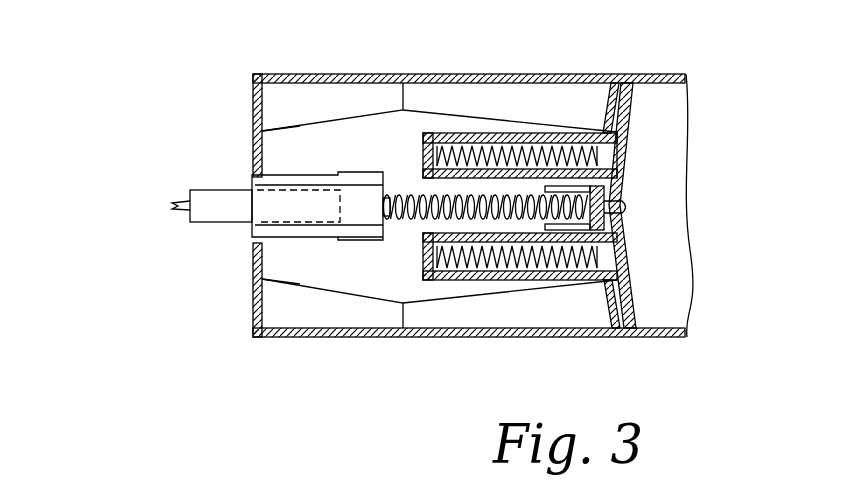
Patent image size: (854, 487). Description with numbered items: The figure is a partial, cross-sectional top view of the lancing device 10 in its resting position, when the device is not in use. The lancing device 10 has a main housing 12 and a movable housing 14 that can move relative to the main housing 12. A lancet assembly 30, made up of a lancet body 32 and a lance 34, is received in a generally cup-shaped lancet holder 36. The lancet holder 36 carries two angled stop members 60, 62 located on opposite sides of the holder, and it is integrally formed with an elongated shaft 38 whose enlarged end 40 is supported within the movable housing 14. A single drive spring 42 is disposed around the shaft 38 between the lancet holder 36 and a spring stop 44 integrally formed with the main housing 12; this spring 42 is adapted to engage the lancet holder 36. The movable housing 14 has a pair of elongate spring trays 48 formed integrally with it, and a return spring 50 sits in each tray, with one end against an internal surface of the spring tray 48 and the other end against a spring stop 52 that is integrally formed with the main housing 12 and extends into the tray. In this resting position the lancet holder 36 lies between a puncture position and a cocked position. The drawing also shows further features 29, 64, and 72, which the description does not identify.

The lancing device 10 is at (133, 70).
The main housing 12 is at (463, 73).
The movable housing 14 is at (663, 73).
The chamber 29 is at (390, 164).
The lancet assembly 30 is at (203, 231).
The lancet body 32 is at (212, 190).
The lance 34 is at (190, 206).
The lancet holder 36 is at (246, 233).
The elongated shaft 38 is at (627, 198).
The enlarged end 40 is at (629, 207).
The spring 42 is at (405, 222).
The spring stop 44 is at (620, 228).
The spring trays 48 is at (500, 133).
The return spring 50 is at (562, 150).
The spring stop 52 is at (622, 150).
The angled stop member 60 is at (350, 185).
The angled stop member 62 is at (353, 232).
The upper slider flange 64 is at (268, 148).
The lower slider flange 72 is at (266, 267).